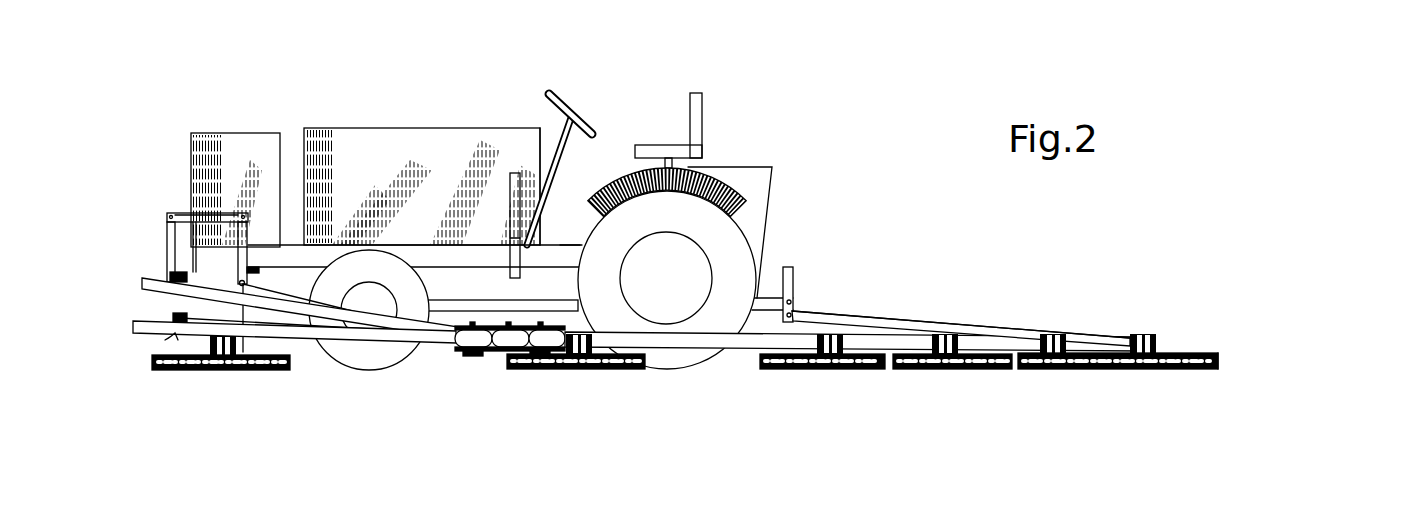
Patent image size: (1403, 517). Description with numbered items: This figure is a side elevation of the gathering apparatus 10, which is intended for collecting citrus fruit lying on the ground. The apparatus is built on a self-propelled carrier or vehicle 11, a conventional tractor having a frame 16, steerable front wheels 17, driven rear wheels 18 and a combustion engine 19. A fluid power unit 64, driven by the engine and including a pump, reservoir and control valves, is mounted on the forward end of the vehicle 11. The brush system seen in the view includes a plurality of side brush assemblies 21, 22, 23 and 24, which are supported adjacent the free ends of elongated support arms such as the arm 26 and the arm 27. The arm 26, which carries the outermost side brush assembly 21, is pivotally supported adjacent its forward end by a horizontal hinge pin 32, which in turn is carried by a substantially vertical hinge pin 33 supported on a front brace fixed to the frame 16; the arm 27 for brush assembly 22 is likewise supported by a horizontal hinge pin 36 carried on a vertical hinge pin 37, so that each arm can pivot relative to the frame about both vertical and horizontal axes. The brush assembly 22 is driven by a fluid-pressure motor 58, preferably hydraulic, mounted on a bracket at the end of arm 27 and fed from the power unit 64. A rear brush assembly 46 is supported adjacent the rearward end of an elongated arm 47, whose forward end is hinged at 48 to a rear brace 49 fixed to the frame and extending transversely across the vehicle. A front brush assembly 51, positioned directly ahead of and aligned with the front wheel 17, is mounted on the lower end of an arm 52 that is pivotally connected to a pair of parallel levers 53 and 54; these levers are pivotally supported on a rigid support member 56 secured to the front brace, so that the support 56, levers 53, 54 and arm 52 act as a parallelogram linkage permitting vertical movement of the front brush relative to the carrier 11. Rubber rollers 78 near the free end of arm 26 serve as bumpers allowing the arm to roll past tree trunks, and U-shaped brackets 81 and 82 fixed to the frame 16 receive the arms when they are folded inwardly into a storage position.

The gathering apparatus 10 is at (784, 130).
The self-propelled carrier or vehicle 11 is at (487, 126).
The frame 16 is at (556, 245).
The steerable front wheels 17 is at (365, 350).
The driven rear wheels 18 is at (680, 348).
The combustion engine 19 is at (378, 130).
The side brush assembly 21 is at (578, 360).
The side brush assembly 22 is at (825, 370).
The side brush assembly 23 is at (940, 370).
The side brush assembly 24 is at (1050, 370).
The elongated support arm 26 is at (428, 300).
The elongated support arm 27 is at (740, 350).
The horizontal hinge pin 32 is at (142, 281).
The vertical hinge pin 33 is at (200, 282).
The horizontal hinge pin 36 is at (134, 323).
The vertical hinge pin 37 is at (165, 340).
The rear brush assembly 46 is at (1214, 352).
The elongated arm 47 is at (950, 326).
The hinge 48 is at (800, 319).
The rear brace 49 is at (796, 303).
The front brush assembly 51 is at (262, 372).
The arm 52 is at (250, 312).
The lever 53 is at (224, 213).
The lever 54 is at (236, 276).
The rigid support member 56 is at (168, 236).
The fluid-pressure motor 58 is at (200, 372).
The fluid power unit 64 is at (192, 138).
The rollers 78 is at (466, 348).
The U-shaped bracket 81 is at (784, 270).
The U-shaped bracket 82 is at (510, 197).